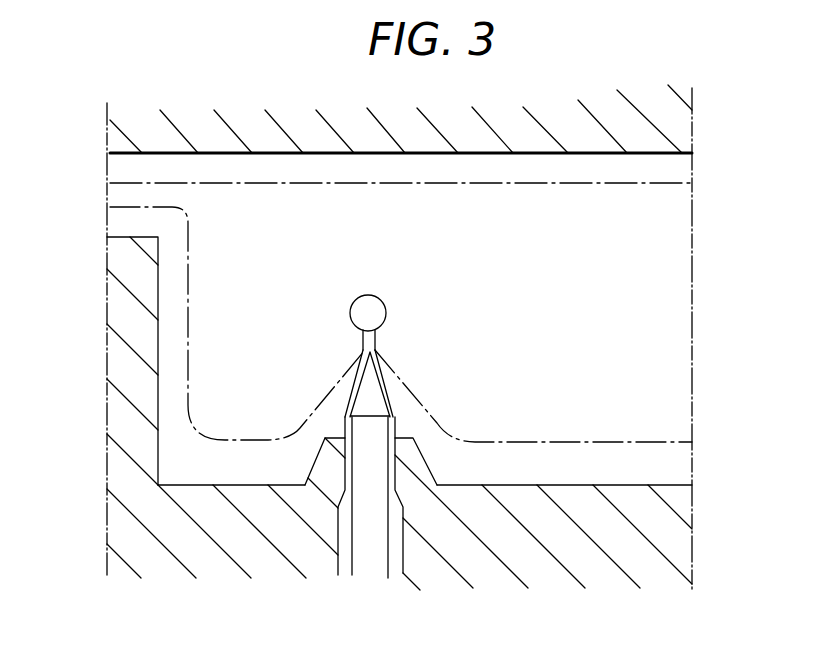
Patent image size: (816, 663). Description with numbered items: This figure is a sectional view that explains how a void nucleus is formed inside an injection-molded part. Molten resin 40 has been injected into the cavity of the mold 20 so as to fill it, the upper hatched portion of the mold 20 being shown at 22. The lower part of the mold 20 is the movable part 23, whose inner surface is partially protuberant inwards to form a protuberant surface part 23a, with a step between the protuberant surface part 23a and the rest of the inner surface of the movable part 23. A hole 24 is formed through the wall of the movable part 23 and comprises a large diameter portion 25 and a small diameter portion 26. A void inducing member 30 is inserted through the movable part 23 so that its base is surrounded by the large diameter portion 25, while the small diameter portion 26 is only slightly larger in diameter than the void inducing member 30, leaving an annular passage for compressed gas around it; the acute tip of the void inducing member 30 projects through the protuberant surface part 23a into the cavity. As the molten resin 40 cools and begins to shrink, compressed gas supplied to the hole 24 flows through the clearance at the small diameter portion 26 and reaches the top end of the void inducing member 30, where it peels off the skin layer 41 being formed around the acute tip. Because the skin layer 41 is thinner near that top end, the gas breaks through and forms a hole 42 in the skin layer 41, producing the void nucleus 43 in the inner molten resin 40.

The mold 20 is at (618, 92).
The housing 22 is at (243, 127).
The movable part 23 is at (123, 536).
The protuberant surface part 23a is at (297, 428).
The hole 24 is at (348, 577).
The large diameter portion 25 is at (390, 578).
The small diameter portion 26 is at (400, 452).
The void inducing member 30 is at (367, 562).
The molten resin 40 is at (660, 262).
The skin layer 41 is at (612, 442).
The hole 42 is at (376, 343).
The void nucleus 43 is at (385, 302).